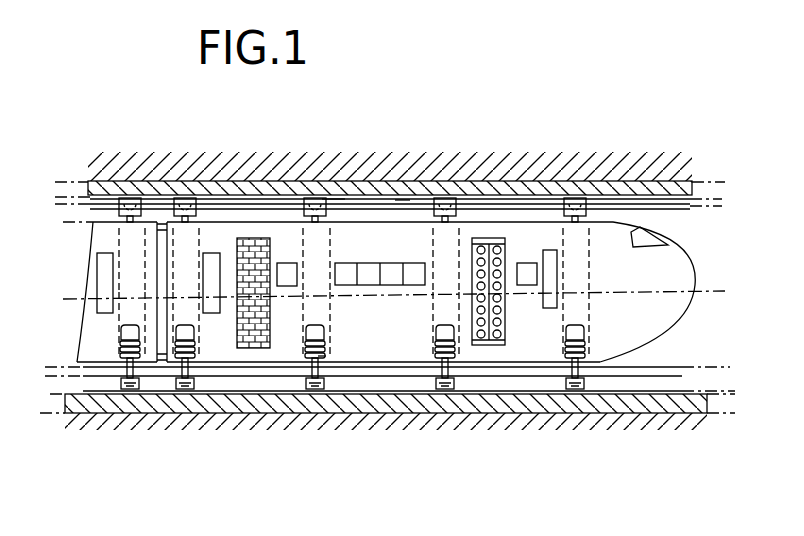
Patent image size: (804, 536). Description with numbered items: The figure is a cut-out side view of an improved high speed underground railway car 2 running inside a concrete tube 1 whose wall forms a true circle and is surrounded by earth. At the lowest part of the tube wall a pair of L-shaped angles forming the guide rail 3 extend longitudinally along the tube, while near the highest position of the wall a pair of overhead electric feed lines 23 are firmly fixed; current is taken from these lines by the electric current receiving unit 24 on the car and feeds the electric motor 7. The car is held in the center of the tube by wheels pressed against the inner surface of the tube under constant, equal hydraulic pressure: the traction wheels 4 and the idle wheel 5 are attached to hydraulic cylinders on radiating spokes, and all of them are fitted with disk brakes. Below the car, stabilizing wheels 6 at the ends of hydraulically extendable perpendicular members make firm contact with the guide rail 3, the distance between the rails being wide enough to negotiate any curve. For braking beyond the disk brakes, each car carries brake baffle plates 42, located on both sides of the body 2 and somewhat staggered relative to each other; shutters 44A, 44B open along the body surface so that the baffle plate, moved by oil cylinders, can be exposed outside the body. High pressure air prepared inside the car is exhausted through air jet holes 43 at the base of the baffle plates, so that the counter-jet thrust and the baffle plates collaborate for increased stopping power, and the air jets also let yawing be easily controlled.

The tube 1 is at (284, 188).
The car 2 is at (542, 214).
The guide rail 3 is at (650, 382).
The traction wheels 4 is at (326, 326).
The idle wheel 5 is at (316, 198).
The stabilizing wheel 6 is at (443, 390).
The electric motor 7 is at (326, 341).
The overhead electric feed line 23 is at (402, 201).
The electric current receiving unit 24 is at (332, 194).
The brake baffle plate 42 is at (490, 247).
The air jet hole 43 is at (270, 338).
The shutter 44A is at (235, 257).
The shutter 44B is at (235, 333).